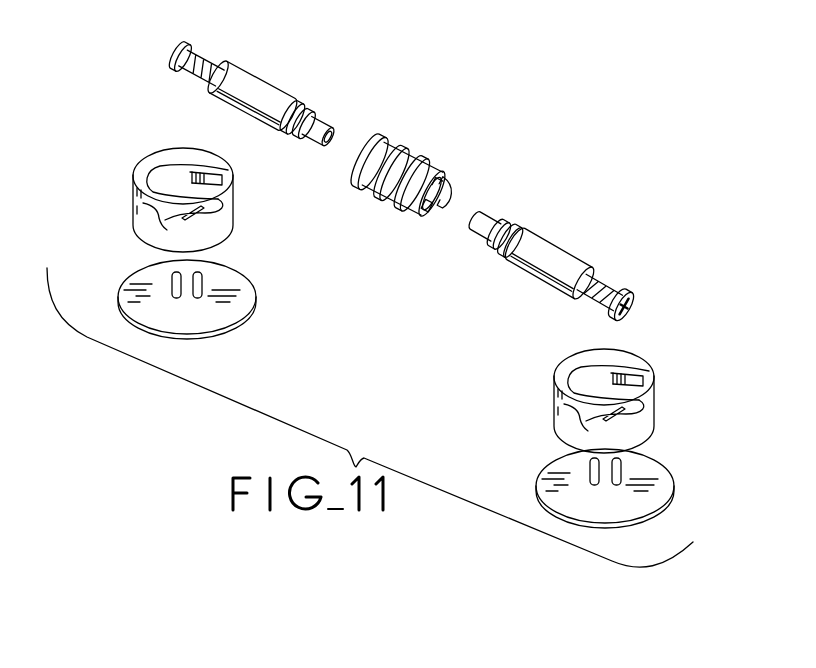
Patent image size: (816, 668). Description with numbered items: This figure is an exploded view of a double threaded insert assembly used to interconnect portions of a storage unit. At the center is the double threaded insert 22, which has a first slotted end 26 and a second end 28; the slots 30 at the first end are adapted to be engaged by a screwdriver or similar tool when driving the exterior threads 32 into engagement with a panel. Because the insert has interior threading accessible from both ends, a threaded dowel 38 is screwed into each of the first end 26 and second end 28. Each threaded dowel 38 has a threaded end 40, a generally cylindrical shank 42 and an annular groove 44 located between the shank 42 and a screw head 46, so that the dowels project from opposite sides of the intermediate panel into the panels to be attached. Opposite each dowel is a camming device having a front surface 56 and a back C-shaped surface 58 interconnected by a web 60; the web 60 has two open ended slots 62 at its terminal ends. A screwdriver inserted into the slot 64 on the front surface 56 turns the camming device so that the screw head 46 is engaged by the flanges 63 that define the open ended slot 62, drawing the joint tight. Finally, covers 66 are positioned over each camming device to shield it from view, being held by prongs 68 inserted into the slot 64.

The double threaded insert 22 is at (407, 174).
The first slotted end 26 is at (437, 196).
The second end 28 is at (370, 162).
The slots 30 is at (431, 195).
The exterior threads 32 is at (402, 178).
The threaded dowel 38 is at (268, 74).
The threaded end 40 is at (304, 110).
The shank 42 is at (254, 108).
The annular groove 44 is at (208, 57).
The screw head 46 is at (179, 50).
The front surface 56 is at (224, 226).
The back C-shaped surface 58 is at (165, 154).
The web 60 is at (157, 168).
The open ended slots 62 is at (210, 178).
The flanges 63 is at (209, 161).
The slot 64 is at (215, 210).
The covers 66 is at (242, 292).
The prongs 68 is at (200, 298).